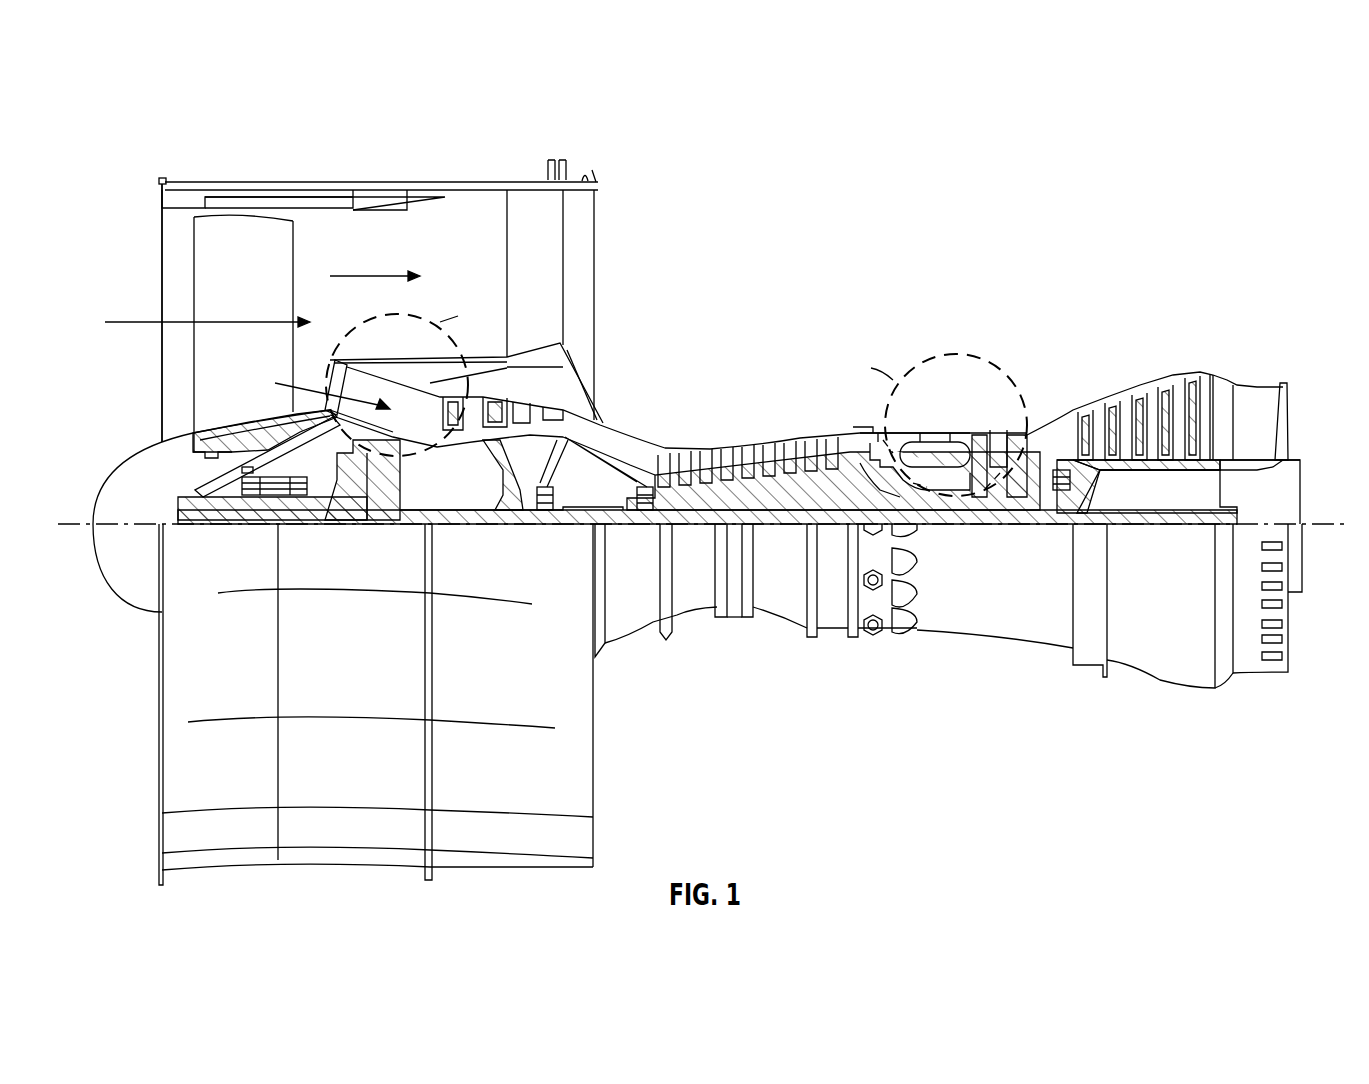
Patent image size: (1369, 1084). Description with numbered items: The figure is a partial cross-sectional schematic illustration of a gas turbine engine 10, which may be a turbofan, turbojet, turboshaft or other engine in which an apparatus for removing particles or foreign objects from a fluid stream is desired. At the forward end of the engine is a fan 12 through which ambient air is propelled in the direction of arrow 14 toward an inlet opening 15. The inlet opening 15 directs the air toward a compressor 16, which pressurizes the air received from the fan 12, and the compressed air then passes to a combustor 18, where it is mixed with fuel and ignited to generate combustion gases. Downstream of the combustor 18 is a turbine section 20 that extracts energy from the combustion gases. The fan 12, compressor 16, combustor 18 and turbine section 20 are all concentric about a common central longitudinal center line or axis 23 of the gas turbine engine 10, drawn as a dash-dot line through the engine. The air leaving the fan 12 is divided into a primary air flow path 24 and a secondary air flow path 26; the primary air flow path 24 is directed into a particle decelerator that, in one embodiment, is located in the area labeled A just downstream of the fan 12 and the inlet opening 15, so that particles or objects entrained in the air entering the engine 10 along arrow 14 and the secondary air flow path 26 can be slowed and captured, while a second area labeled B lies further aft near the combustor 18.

The gas turbine engine 10 is at (1244, 154).
The fan 12 is at (160, 175).
The arrow 14 is at (143, 322).
The inlet opening 15 is at (332, 365).
The compressor 16 is at (428, 177).
The combustor 18 is at (975, 172).
The turbine section 20 is at (1235, 178).
The center line or axis 23 is at (1308, 522).
The primary air flow path 24 is at (378, 275).
The secondary air flow path 26 is at (290, 383).